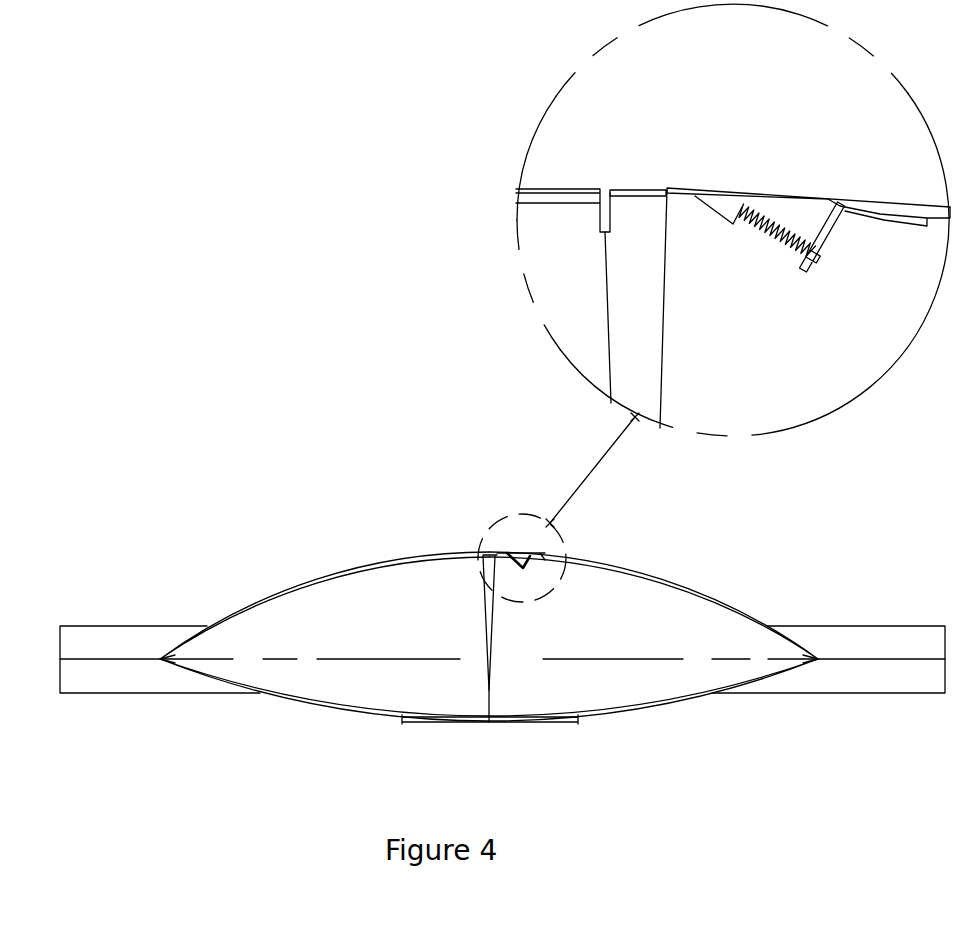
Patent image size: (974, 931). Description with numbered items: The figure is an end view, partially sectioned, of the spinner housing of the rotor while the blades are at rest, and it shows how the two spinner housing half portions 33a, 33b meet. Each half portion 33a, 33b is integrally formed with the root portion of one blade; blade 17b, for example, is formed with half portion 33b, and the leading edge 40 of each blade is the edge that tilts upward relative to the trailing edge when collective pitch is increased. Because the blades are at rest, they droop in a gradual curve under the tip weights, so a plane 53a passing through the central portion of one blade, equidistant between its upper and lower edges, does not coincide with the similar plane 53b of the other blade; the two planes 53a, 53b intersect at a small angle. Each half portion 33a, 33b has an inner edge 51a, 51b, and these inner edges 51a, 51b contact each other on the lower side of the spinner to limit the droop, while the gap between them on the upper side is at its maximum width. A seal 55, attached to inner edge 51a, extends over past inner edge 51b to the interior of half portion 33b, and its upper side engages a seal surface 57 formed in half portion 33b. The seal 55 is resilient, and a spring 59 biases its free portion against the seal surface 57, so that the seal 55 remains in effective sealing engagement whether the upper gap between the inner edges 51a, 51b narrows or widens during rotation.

The leading edge 40 is at (160, 623).
The rotor blade 17b is at (823, 623).
The spinner housing half portion 33a is at (272, 618).
The spinner housing half portion 33b is at (730, 618).
The inner edge 51a is at (485, 615).
The inner edge 51b is at (493, 615).
The plane 53a is at (142, 658).
The plane 53b is at (783, 660).
The seal 55 is at (633, 189).
The seal surface 57 is at (764, 190).
The spring 59 is at (775, 240).